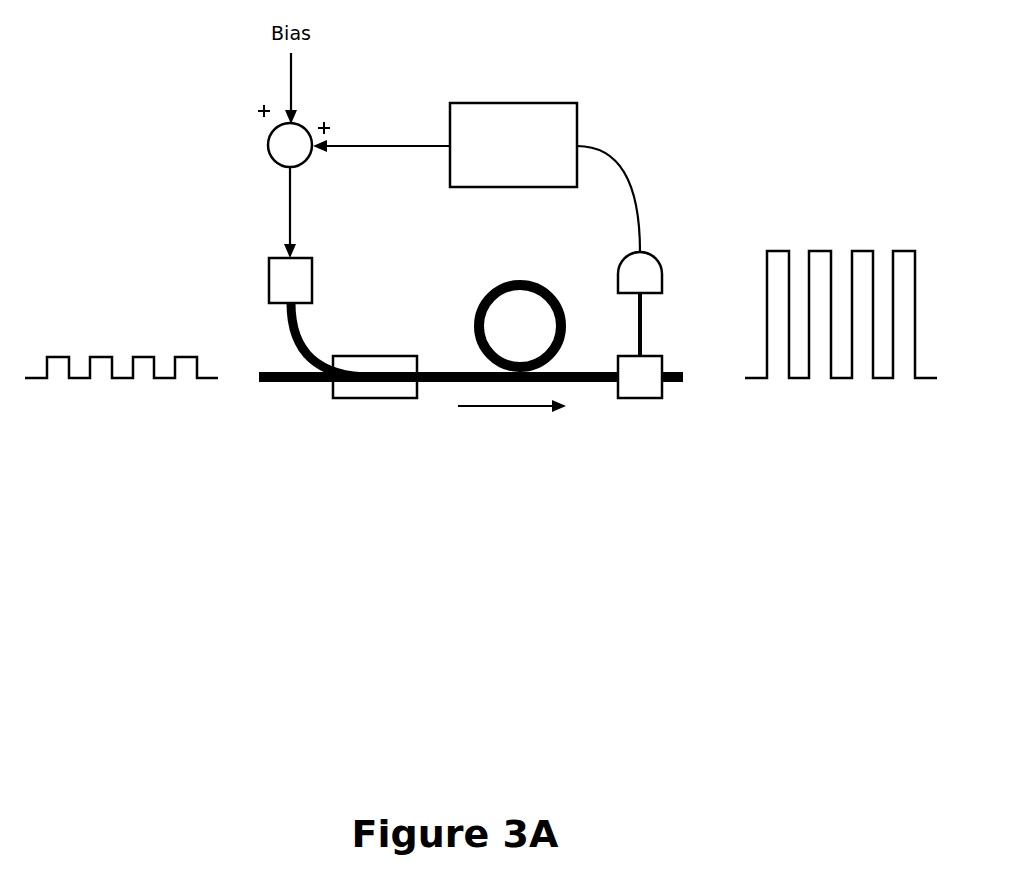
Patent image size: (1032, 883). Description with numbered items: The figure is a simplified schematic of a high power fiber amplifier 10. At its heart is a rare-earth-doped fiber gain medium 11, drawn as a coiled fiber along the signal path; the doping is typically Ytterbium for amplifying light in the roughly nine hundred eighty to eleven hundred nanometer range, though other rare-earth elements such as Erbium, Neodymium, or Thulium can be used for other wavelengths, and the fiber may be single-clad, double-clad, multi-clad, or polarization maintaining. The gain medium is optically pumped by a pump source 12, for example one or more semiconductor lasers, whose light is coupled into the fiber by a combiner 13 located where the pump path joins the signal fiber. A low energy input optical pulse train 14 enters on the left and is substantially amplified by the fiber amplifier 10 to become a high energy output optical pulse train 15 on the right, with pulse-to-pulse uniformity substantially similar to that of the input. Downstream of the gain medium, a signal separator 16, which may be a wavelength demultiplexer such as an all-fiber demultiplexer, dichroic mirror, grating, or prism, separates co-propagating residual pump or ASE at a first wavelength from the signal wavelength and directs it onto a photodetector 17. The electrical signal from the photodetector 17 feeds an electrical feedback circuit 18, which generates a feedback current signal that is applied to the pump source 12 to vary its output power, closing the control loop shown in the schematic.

The fiber amplifier 10 is at (542, 491).
The rare-earth-doped fiber gain medium 11 is at (520, 310).
The pump source 12 is at (275, 235).
The combiner 13 is at (375, 389).
The input optical pulse train 14 is at (121, 410).
The output optical pulse train 15 is at (841, 357).
The signal separator 16 is at (640, 388).
The photodetector 17 is at (654, 304).
The electrical feedback circuit 18 is at (476, 163).